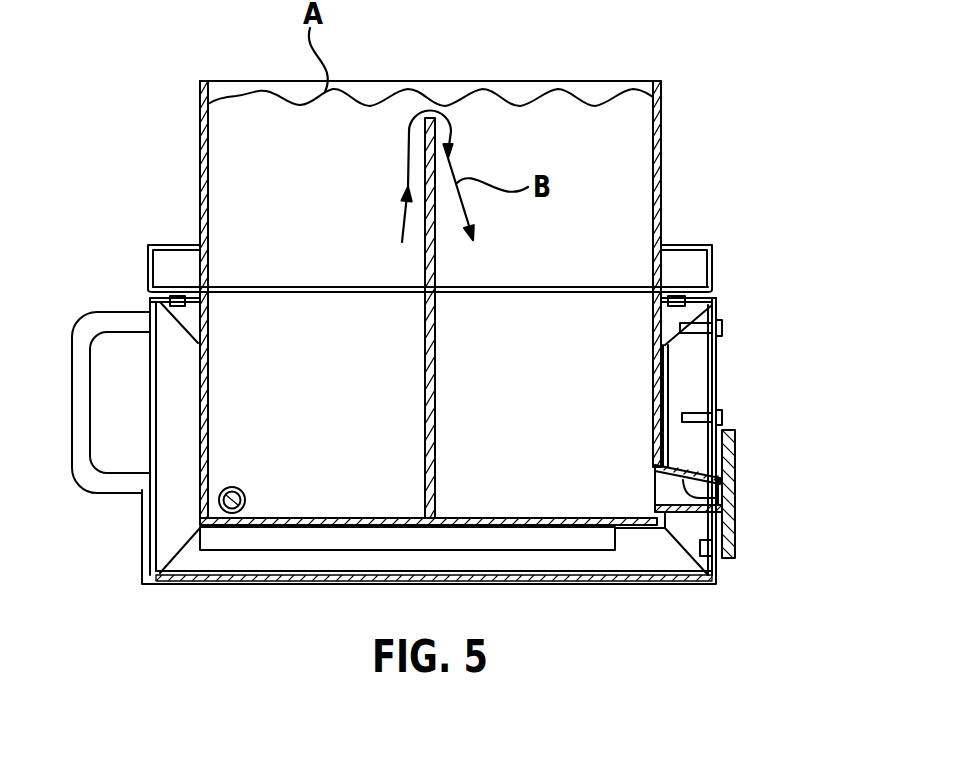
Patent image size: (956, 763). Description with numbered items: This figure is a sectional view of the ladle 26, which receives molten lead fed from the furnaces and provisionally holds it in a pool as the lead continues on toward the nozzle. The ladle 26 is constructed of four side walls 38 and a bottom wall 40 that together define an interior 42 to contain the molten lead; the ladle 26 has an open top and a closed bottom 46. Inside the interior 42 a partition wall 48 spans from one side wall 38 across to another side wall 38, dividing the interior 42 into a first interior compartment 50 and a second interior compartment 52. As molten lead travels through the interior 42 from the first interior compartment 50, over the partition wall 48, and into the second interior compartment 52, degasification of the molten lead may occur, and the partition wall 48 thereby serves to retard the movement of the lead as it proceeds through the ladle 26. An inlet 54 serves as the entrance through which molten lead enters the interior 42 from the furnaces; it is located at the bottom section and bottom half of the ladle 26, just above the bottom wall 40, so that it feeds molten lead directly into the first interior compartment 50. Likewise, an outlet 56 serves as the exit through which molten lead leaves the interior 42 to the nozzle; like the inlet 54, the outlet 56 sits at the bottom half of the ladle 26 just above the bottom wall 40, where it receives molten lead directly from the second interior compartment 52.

The ladle 26 is at (680, 94).
The side wall 38 is at (200, 163).
The interior 42 is at (623, 150).
The partition wall 48 is at (436, 322).
The first interior compartment 50 is at (326, 427).
The second interior compartment 52 is at (572, 427).
The inlet 54 is at (245, 500).
The bottom wall 40 is at (305, 522).
The closed bottom 46 is at (547, 527).
The outlet 56 is at (723, 497).